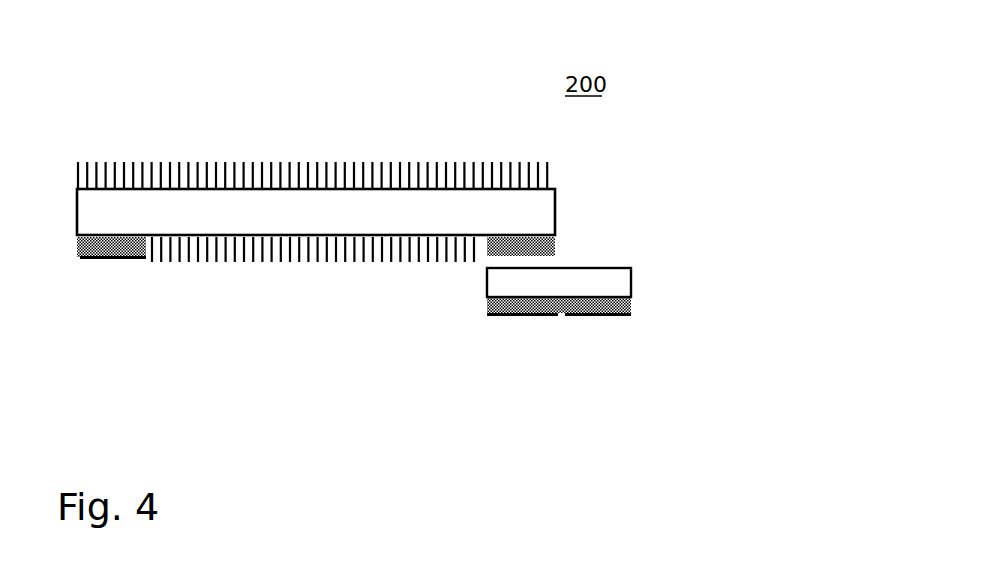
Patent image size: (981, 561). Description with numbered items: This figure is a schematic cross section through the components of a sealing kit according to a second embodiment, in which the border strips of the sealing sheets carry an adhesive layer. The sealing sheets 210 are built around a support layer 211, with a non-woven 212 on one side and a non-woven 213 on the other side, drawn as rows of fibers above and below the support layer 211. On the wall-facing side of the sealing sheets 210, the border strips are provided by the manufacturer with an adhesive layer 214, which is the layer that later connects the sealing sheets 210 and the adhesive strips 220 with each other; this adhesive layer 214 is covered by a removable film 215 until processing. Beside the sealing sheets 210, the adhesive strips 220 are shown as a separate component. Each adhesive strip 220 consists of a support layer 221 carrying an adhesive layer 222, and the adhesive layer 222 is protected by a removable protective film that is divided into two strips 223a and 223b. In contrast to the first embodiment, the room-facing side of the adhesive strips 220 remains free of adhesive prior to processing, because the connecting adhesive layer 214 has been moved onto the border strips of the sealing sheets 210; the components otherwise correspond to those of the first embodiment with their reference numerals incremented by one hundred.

The sealing sheets 210 is at (288, 222).
The support layer 211 is at (302, 197).
The non-woven 212 is at (383, 260).
The non-woven 213 is at (240, 176).
The adhesive layer 214 is at (140, 259).
The removable film 215 is at (90, 261).
The adhesive strips 220 is at (589, 325).
The support layer 221 is at (545, 278).
The adhesive layer 222 is at (590, 316).
The removable protective film strip 223a is at (505, 317).
The removable protective film strip 223b is at (618, 317).